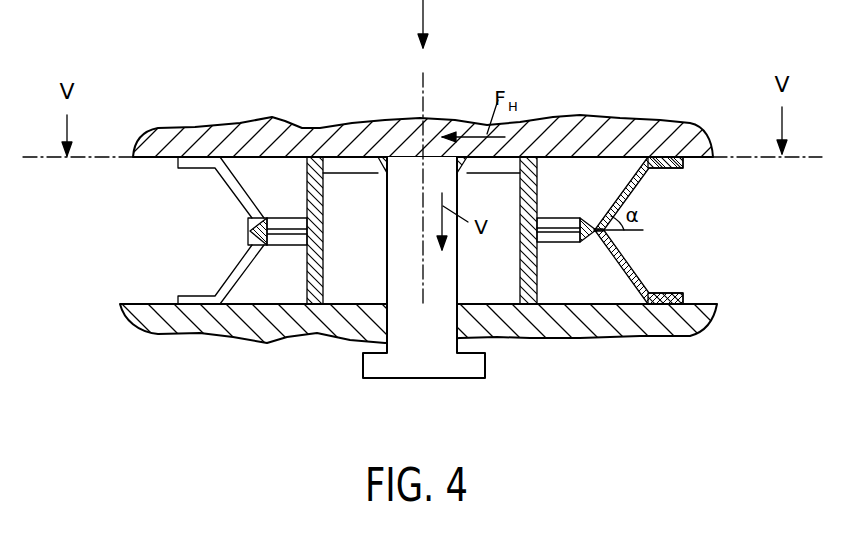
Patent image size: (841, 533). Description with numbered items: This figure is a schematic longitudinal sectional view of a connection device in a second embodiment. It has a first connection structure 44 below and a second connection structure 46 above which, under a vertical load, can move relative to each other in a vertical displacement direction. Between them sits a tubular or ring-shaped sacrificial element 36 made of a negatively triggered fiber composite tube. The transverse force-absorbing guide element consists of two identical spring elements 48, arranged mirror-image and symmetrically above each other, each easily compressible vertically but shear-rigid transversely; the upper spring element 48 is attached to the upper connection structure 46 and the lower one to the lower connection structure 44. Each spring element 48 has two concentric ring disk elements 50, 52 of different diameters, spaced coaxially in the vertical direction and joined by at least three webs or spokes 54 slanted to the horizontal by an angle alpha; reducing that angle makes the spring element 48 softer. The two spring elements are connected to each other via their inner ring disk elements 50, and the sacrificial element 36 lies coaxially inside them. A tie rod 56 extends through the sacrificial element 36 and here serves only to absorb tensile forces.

The sacrificial element 36 is at (327, 203).
The first connection structure 44 is at (228, 328).
The second connection structure 46 is at (184, 130).
The spring element 48 is at (197, 168).
The inner ring disk element 50 is at (588, 219).
The outer ring disk element 52 is at (687, 166).
The webs or spokes 54 is at (640, 177).
The tie rod 56 is at (447, 370).